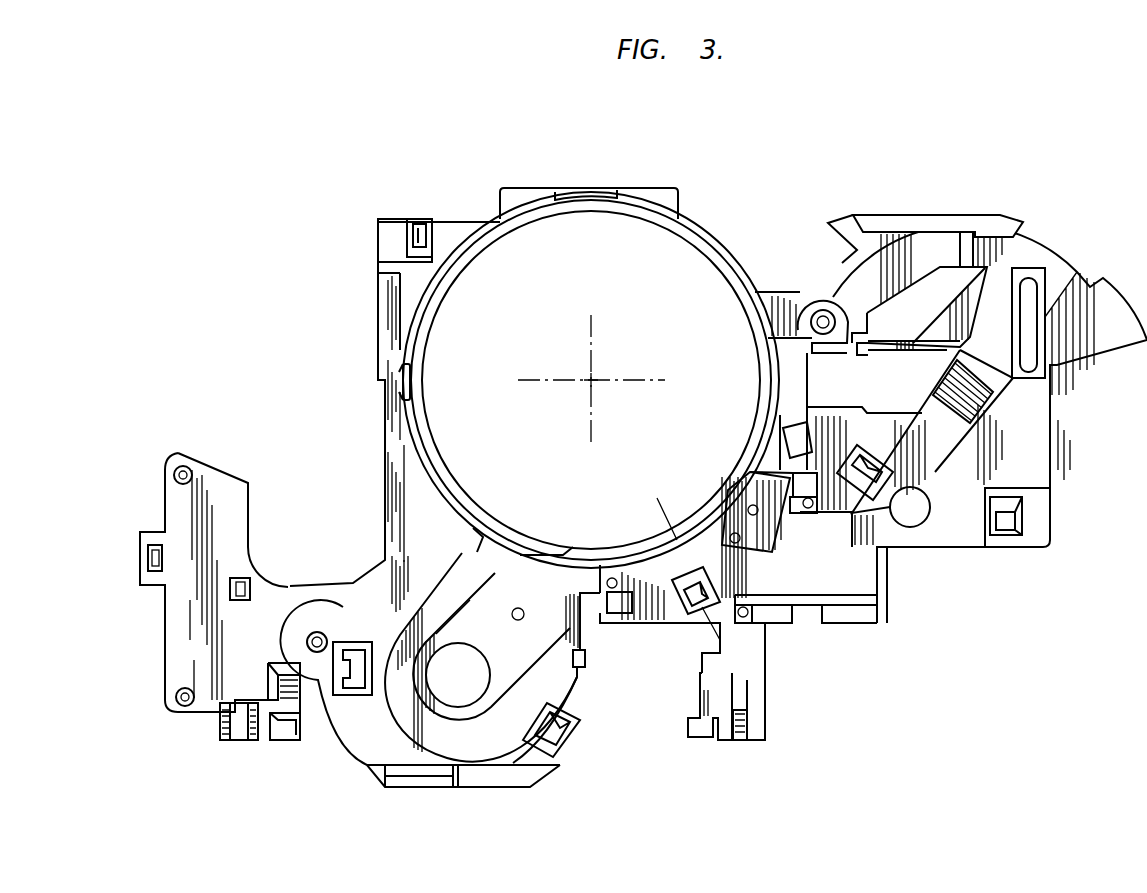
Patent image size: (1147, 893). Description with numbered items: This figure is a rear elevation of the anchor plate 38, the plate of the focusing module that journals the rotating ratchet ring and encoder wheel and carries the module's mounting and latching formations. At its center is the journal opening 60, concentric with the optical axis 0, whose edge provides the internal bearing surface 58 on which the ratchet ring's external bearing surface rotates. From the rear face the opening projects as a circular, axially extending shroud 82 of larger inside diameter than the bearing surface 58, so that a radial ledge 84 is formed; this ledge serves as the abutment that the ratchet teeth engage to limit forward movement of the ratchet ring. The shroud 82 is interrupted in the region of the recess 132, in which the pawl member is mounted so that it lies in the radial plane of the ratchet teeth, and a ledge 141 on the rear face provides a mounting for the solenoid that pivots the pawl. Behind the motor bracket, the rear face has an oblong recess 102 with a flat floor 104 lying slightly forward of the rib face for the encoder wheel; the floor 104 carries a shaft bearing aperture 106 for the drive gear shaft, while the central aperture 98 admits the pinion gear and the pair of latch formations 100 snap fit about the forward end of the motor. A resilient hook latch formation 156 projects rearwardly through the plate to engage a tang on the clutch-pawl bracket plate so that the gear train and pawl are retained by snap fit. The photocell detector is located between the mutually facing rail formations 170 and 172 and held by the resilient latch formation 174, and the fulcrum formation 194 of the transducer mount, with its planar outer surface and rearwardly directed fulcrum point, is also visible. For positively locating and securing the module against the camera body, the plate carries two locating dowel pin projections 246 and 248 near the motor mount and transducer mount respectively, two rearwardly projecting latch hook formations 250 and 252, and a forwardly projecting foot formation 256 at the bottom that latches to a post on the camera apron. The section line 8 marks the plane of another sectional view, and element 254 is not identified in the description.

The anchor plate 38 is at (826, 187).
The journal opening 60 is at (660, 287).
The internal bearing surface 58 is at (717, 270).
The radial ledge 84 is at (422, 339).
The shroud 82 is at (422, 433).
The optical axis 0 is at (594, 377).
The latch hook formation 250 is at (420, 238).
The locating dowel pin projection 248 is at (827, 318).
The rail formation 170 is at (822, 354).
The resilient latch formation 174 is at (882, 350).
The rail formation 172 is at (838, 405).
The fulcrum formation 194 is at (963, 395).
The recess 132 is at (770, 528).
The ledge 141 is at (798, 596).
The latch hook formation 252 is at (1002, 522).
The resilient hook latch formation 156 is at (715, 583).
The section line 8- 8 is at (700, 627).
The locating dowel pin projection 246 is at (316, 634).
The latch formations 100 is at (352, 650).
The shaft bearing aperture 106 is at (518, 612).
The oblong recess 102 is at (446, 620).
The central aperture 98 is at (452, 702).
The flat floor 104 is at (517, 657).
The foot formation 256 is at (268, 722).
The mounting leg 254 is at (725, 728).